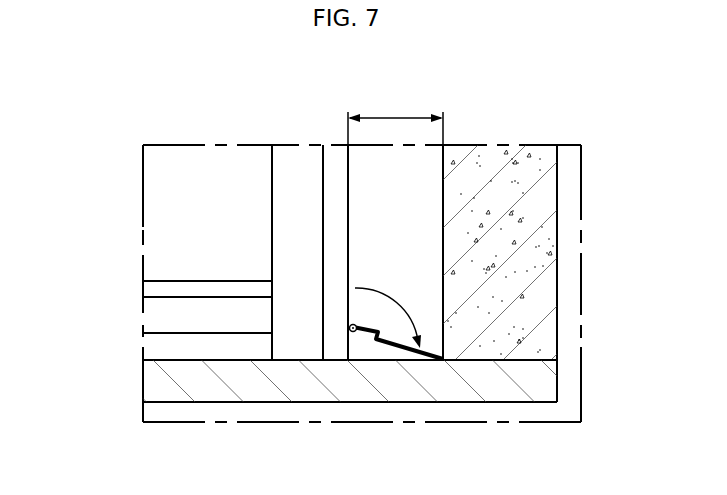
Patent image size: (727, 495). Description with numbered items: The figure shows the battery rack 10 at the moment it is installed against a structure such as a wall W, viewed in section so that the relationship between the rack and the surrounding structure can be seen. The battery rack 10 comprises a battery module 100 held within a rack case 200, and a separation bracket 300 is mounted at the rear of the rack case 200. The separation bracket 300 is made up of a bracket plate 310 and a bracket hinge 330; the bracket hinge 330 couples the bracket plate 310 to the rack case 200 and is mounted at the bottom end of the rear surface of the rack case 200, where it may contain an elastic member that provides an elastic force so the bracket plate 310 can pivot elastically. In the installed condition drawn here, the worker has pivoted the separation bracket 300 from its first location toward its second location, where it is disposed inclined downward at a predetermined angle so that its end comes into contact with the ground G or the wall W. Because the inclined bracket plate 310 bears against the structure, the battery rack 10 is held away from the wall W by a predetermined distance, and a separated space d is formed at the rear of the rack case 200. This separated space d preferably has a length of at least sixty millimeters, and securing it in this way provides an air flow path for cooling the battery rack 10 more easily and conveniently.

The battery rack 10 is at (195, 131).
The battery module 100 is at (145, 225).
The rack case 200 is at (297, 325).
The separation bracket 300 is at (389, 350).
The bracket plate 310 is at (414, 352).
The bracket hinge 330 is at (353, 339).
The ground G is at (162, 382).
The wall W is at (527, 227).
The separated space d is at (395, 119).